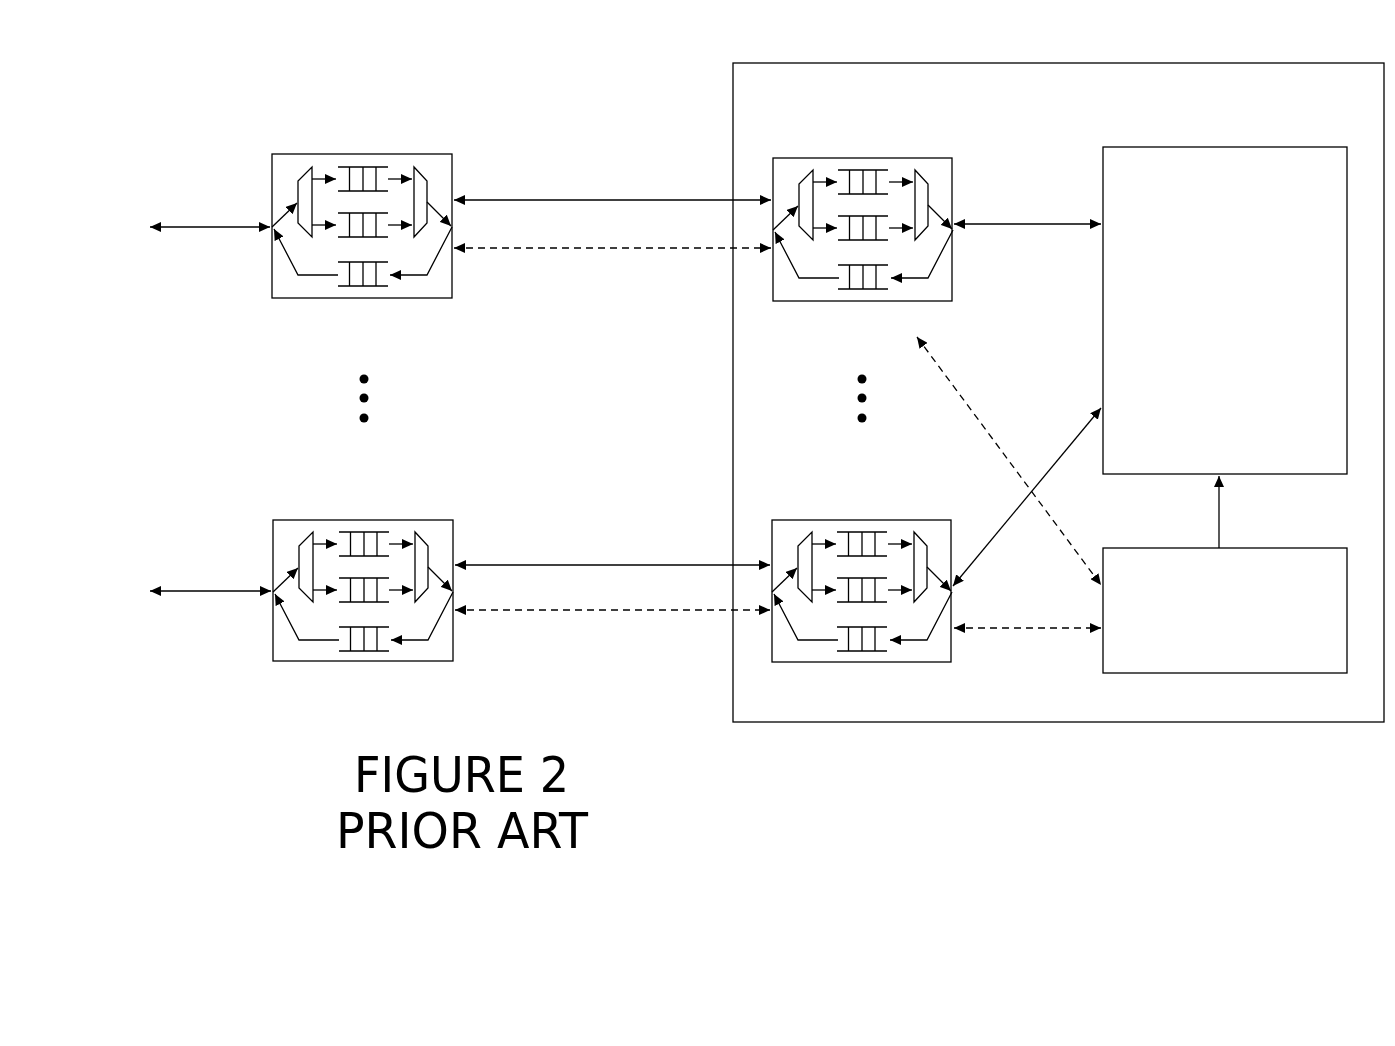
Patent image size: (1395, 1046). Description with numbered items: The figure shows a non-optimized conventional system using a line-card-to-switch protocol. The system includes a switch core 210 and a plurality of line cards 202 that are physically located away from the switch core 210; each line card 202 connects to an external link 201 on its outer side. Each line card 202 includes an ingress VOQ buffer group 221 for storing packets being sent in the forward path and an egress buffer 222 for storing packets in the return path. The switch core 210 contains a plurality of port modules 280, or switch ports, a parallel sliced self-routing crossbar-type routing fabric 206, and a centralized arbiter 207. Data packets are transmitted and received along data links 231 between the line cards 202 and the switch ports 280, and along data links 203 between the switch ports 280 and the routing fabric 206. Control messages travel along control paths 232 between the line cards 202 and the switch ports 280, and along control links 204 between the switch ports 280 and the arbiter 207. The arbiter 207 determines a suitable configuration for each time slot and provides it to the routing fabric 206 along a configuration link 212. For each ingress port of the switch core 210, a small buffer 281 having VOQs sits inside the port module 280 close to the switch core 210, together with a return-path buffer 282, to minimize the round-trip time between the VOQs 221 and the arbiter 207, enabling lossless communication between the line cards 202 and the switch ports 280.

The external link 201 is at (222, 227).
The line card 202 is at (335, 154).
The data link 203 is at (1045, 223).
The control link 204 is at (988, 437).
The routing fabric 206 is at (1198, 358).
The arbiter module 207 is at (1255, 642).
The switch core 210 is at (733, 170).
The configuration link 212 is at (1219, 532).
The ingress VOQ buffer group 221 is at (367, 167).
The egress buffer 222 is at (363, 285).
The data link 231 is at (602, 199).
The control path 232 is at (597, 250).
The port module 280 is at (837, 158).
The small buffer 281 is at (863, 170).
The switch output queue 282 is at (863, 290).